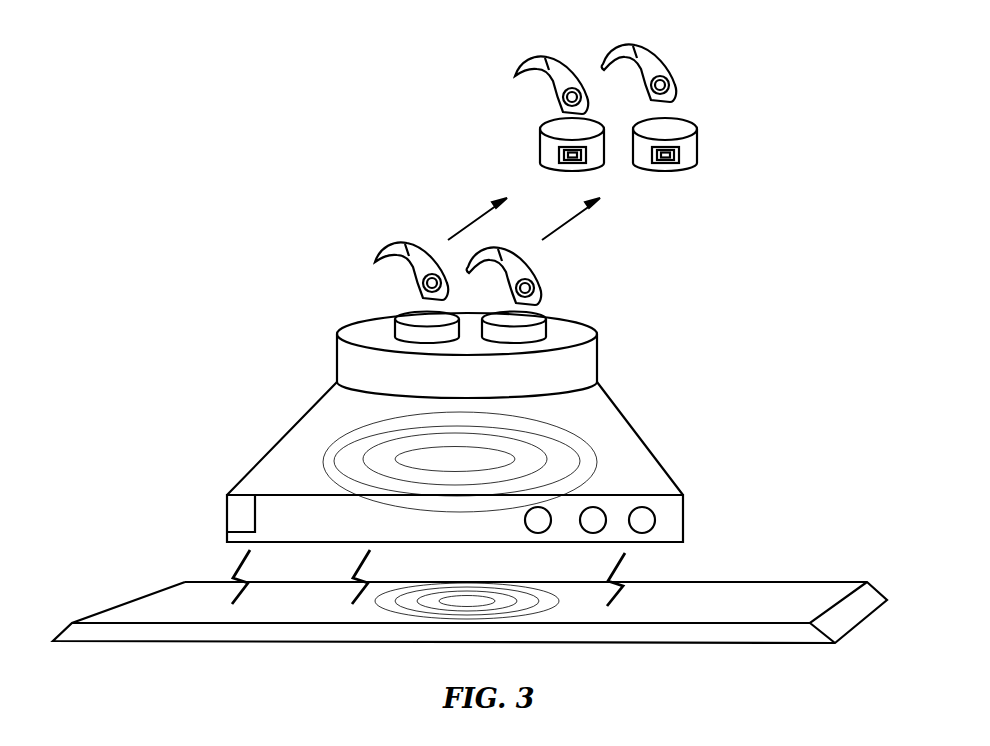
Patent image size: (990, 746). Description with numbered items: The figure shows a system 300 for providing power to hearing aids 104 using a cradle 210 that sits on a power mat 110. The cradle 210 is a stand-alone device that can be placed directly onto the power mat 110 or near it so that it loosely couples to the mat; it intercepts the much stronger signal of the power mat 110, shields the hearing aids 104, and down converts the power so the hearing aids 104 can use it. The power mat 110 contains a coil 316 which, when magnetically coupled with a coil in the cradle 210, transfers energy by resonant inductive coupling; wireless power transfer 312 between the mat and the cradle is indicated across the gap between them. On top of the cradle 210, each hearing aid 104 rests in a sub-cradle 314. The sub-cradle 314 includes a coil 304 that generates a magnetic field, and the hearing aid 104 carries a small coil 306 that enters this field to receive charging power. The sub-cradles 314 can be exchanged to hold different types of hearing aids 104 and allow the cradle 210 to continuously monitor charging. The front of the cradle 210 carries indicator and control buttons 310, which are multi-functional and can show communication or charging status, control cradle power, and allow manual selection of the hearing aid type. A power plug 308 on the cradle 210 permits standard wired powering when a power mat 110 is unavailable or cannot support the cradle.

The system 300 is at (882, 84).
The small coil 306 is at (560, 103).
The coil 304 is at (560, 164).
The hearing aid 104 is at (378, 261).
The sub-cradle 314 is at (395, 324).
The cradle 210 is at (338, 360).
The power plug 308 is at (227, 512).
The indicator and control buttons 310 is at (655, 520).
The power mat 110 is at (135, 605).
The wireless power transfer 312 is at (356, 587).
The coil 316 is at (470, 623).